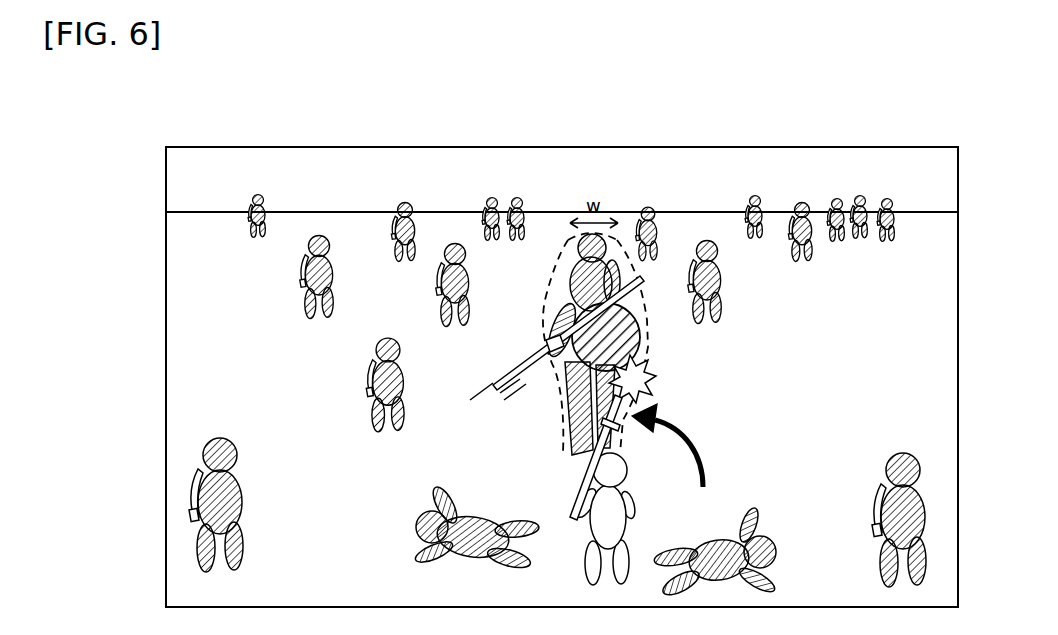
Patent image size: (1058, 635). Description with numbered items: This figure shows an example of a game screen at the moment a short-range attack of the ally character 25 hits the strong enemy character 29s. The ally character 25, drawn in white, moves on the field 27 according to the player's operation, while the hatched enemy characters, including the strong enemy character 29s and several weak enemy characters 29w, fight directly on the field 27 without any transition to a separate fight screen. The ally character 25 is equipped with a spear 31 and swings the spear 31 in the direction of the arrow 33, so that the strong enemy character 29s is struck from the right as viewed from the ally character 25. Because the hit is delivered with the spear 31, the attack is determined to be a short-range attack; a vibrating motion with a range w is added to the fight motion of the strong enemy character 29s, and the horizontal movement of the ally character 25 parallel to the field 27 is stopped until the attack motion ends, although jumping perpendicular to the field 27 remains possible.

The ally character 25 is at (630, 513).
The field 27 is at (930, 226).
The strong enemy character 29s is at (562, 297).
The weak enemy character 29w is at (220, 438).
The spear 31 is at (572, 512).
The arrow 33 is at (685, 432).